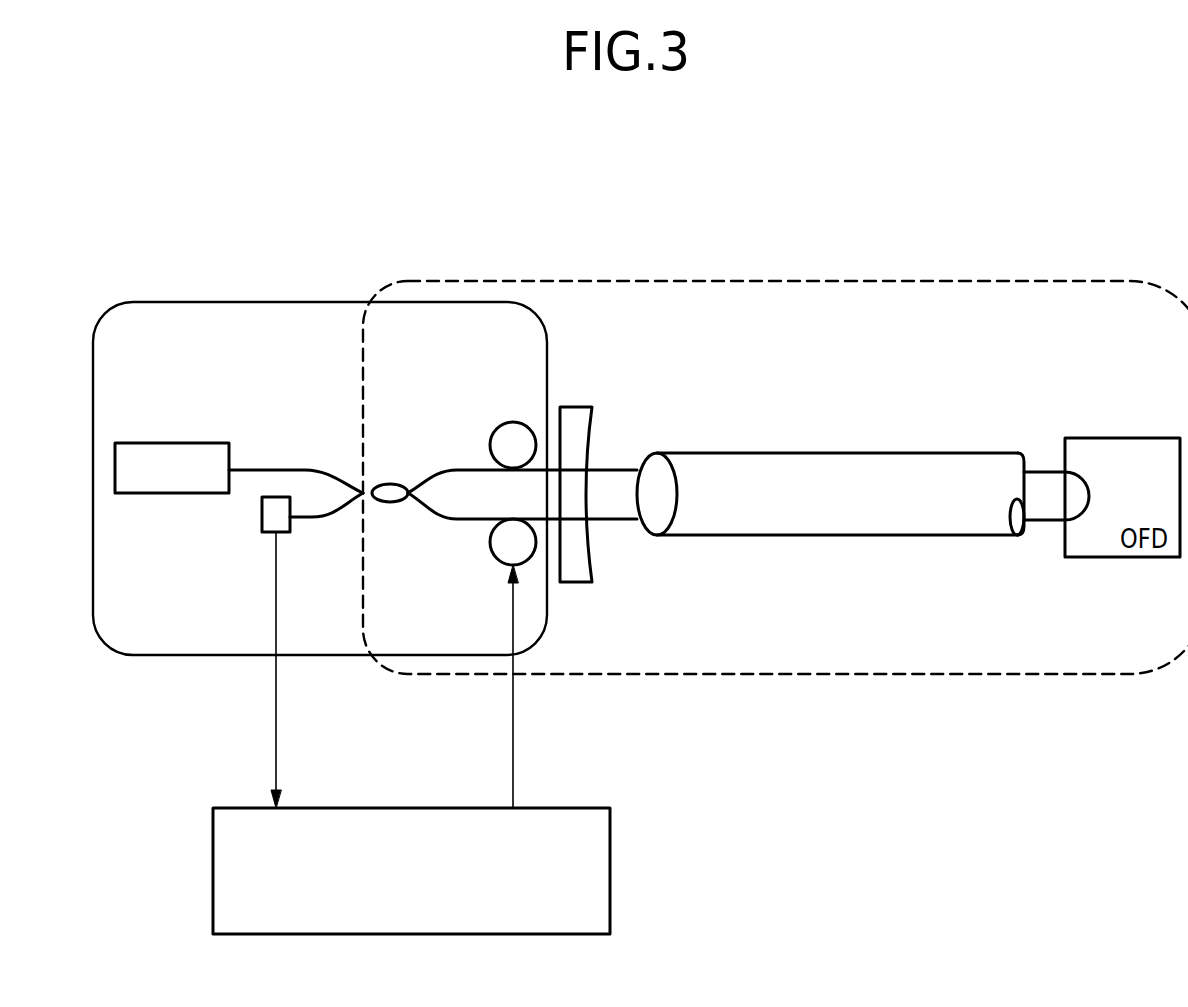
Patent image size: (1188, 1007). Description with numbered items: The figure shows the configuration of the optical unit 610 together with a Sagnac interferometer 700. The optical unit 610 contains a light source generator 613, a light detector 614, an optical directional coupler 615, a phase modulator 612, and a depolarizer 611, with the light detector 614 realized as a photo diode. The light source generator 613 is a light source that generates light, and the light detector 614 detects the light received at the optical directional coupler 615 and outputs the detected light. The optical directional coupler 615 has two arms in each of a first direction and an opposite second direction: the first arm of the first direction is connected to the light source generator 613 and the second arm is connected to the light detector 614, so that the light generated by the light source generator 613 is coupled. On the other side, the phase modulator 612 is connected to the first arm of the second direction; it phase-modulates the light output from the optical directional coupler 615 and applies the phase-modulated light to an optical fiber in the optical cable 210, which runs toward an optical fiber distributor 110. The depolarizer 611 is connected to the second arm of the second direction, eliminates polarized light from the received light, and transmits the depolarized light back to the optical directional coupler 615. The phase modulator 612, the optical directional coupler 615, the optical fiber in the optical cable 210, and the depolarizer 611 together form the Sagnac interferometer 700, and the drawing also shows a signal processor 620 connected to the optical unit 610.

The optical unit 610 is at (250, 302).
The depolarizer 611 is at (503, 422).
The phase modulator 612 is at (493, 562).
The light source generator 613 is at (198, 443).
The light detector 614 is at (262, 533).
The optical directional coupler 615 is at (392, 484).
The optical fiber distributor 110 is at (574, 407).
The optical cable 210 is at (738, 453).
The signal processor 620 is at (610, 912).
The Sagnac interferometer 700 is at (900, 675).